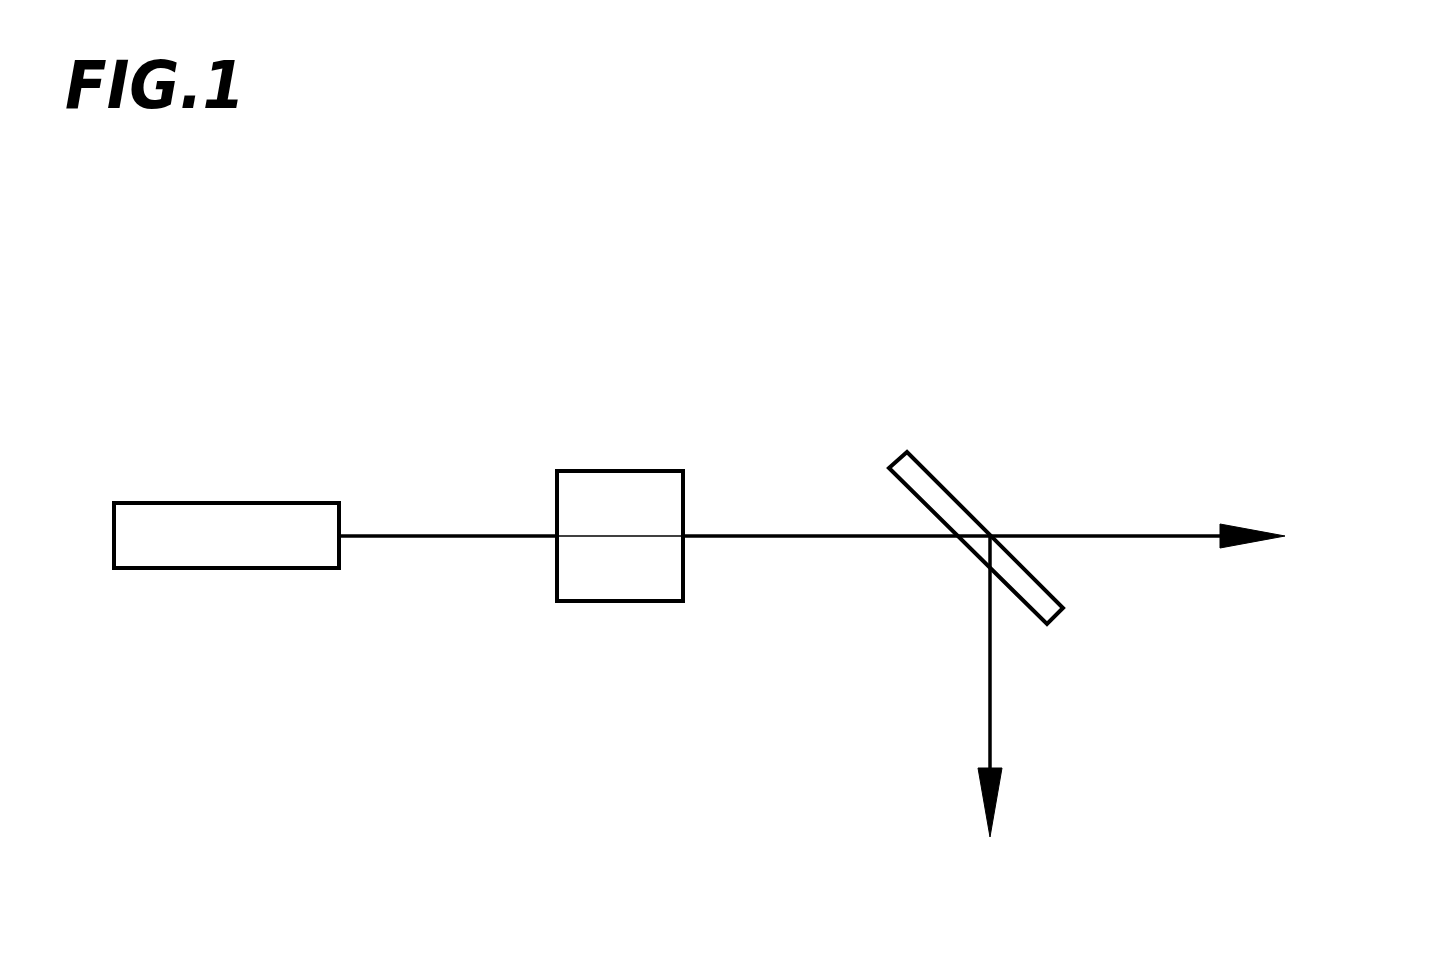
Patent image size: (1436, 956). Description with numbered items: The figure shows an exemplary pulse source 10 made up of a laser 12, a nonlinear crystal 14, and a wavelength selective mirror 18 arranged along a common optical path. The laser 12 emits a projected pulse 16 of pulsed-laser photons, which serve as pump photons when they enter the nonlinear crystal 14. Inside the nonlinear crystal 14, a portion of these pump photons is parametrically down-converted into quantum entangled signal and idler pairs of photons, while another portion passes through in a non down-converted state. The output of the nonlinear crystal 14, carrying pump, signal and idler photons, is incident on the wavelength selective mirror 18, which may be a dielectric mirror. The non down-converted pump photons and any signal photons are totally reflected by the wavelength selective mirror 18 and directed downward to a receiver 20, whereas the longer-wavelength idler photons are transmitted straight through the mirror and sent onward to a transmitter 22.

The pulse source 10 is at (1222, 177).
The laser 12 is at (232, 501).
The nonlinear crystal 14 is at (645, 470).
The projected pulse 16 is at (433, 533).
The wavelength selective mirror 18 is at (943, 487).
The receiver 20 is at (977, 715).
The transmitter 22 is at (1205, 521).